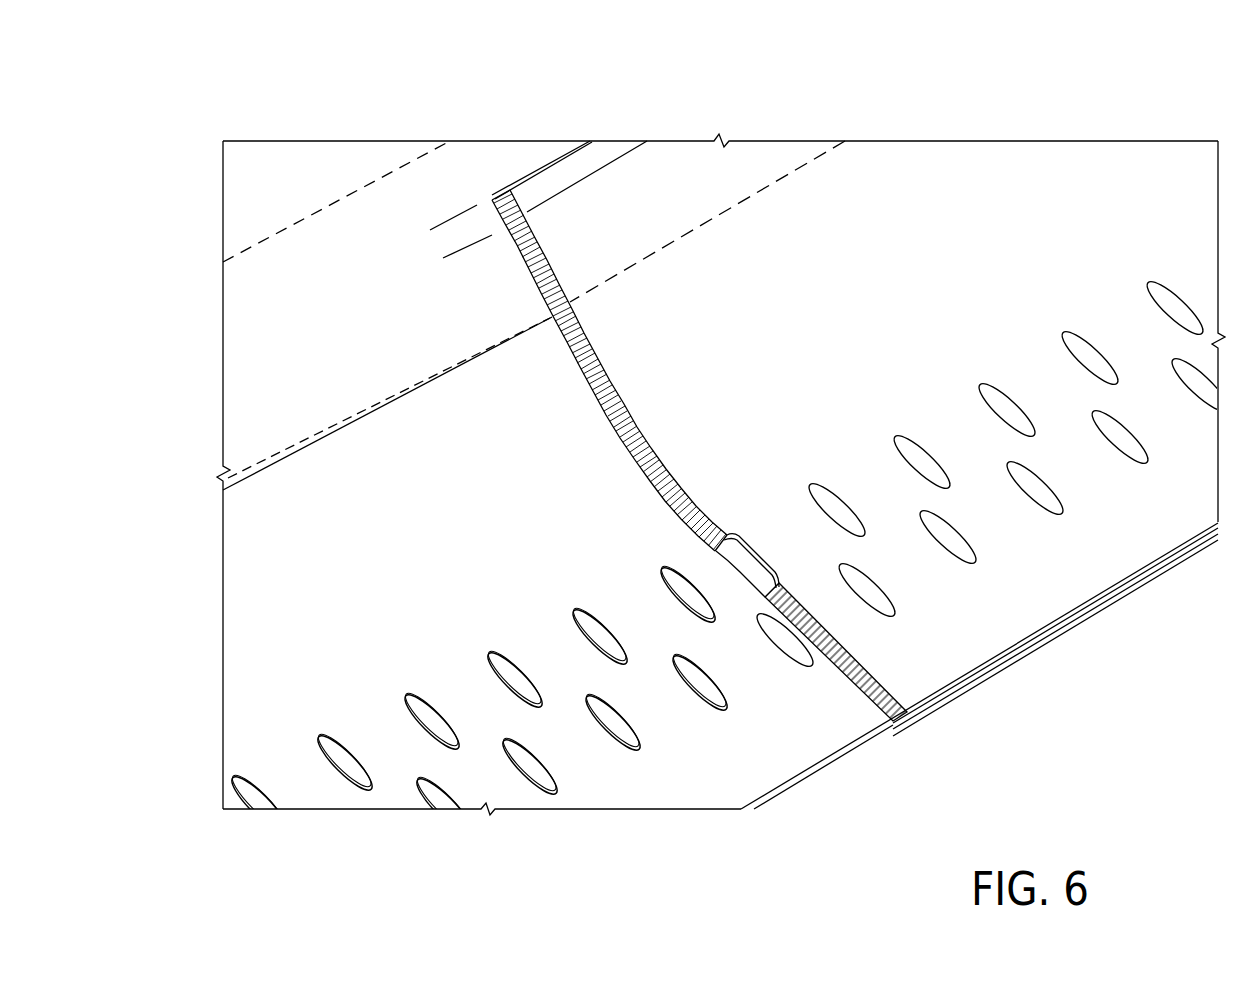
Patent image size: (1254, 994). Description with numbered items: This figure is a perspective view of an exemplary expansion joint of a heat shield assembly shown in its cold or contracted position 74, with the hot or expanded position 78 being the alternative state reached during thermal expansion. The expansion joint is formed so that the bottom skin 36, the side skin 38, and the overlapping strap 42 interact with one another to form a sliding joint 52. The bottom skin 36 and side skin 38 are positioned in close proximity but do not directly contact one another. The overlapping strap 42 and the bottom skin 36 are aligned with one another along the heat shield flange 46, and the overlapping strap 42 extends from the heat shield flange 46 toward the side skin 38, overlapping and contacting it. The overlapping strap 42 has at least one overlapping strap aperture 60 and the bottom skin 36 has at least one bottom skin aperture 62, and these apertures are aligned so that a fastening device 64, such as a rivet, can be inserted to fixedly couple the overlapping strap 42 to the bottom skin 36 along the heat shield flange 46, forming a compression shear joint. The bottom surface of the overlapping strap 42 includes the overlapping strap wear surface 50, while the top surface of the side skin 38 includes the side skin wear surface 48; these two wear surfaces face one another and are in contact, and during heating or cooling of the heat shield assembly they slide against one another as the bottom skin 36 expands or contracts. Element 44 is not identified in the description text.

The sliding joint 52 is at (252, 113).
The side skin 38 is at (380, 166).
The side skin wear surface 48 is at (452, 178).
The overlapping strap 42 is at (885, 170).
The overlapping strap wear surface 50 is at (768, 185).
The cold or contracted position 74 is at (451, 218).
The hot or expanded position 78 is at (470, 246).
The overlapping strap aperture 60 is at (747, 560).
The first sheet portion 44 is at (797, 758).
The heat shield flange 46 is at (1000, 660).
The bottom skin 36 is at (715, 770).
The bottom skin aperture 62 is at (533, 772).
The fastening device 64 is at (756, 560).